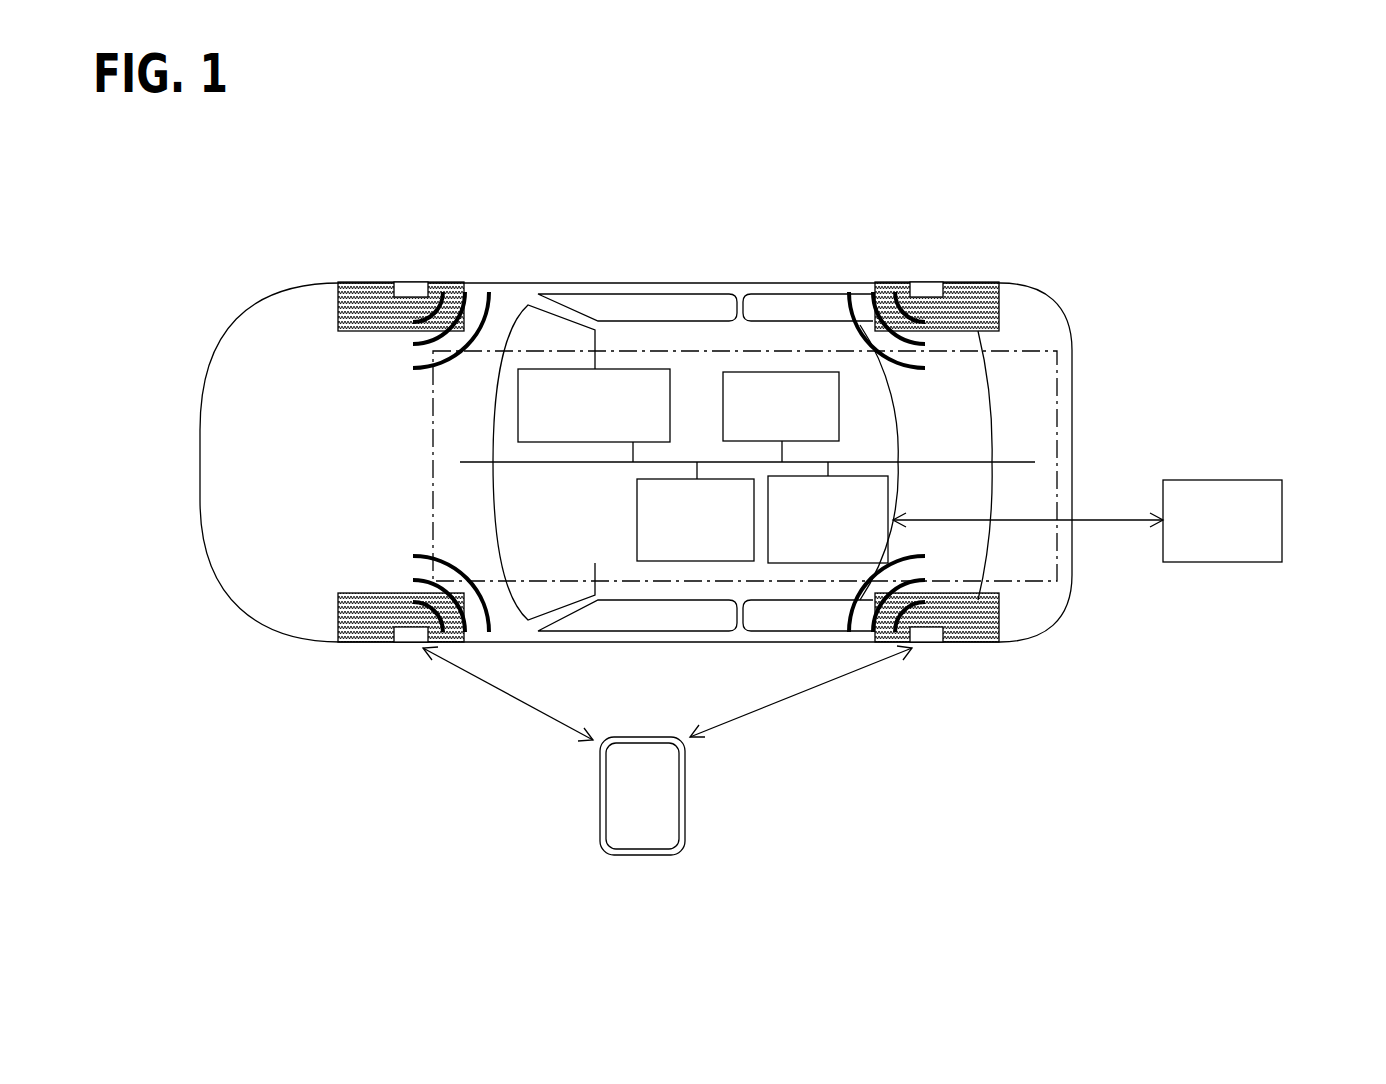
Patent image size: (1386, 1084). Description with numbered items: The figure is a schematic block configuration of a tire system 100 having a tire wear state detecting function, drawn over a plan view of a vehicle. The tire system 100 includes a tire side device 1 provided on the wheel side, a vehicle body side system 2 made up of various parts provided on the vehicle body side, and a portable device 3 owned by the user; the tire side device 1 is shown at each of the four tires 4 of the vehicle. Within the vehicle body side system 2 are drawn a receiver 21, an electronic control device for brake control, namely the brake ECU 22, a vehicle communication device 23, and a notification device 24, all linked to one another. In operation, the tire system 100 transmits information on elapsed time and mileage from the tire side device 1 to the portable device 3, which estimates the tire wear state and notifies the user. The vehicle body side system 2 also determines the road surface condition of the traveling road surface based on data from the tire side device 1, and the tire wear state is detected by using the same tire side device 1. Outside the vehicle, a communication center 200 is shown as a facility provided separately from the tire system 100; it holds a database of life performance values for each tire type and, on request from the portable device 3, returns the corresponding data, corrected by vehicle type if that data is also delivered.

The tire side device 1 is at (407, 285).
The vehicle body side system 2 is at (697, 350).
The portable device 3 is at (618, 855).
The tire 4 is at (337, 308).
The receiver 21 is at (710, 561).
The brake ECU 22 is at (786, 372).
The vehicle communication device 23 is at (820, 563).
The notification device 24 is at (619, 369).
The tire system 100 is at (548, 258).
The communication center 200 is at (1282, 520).